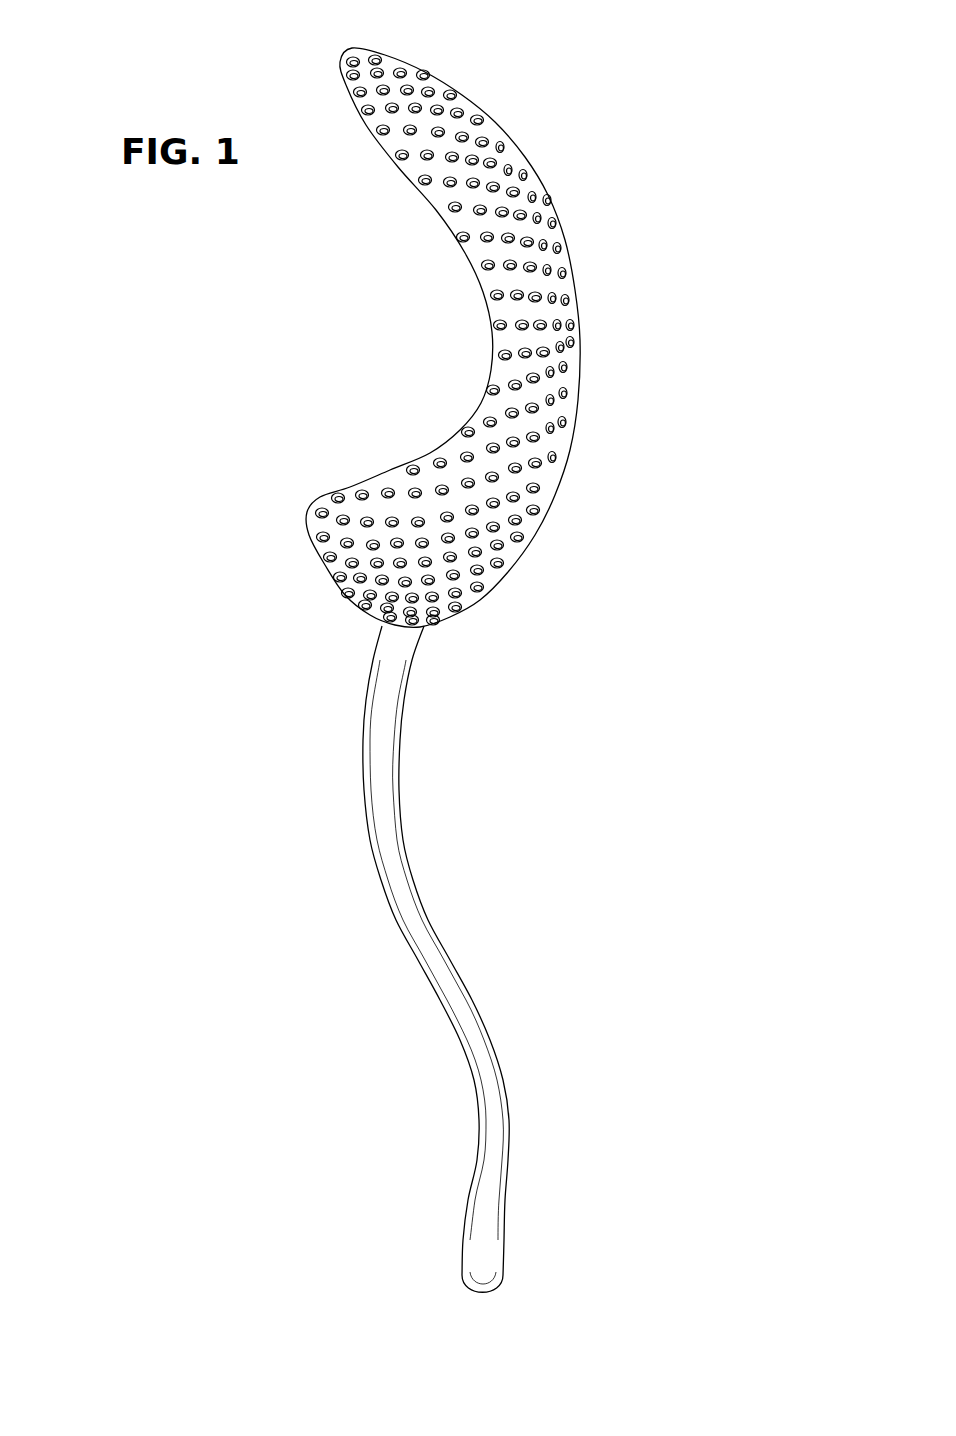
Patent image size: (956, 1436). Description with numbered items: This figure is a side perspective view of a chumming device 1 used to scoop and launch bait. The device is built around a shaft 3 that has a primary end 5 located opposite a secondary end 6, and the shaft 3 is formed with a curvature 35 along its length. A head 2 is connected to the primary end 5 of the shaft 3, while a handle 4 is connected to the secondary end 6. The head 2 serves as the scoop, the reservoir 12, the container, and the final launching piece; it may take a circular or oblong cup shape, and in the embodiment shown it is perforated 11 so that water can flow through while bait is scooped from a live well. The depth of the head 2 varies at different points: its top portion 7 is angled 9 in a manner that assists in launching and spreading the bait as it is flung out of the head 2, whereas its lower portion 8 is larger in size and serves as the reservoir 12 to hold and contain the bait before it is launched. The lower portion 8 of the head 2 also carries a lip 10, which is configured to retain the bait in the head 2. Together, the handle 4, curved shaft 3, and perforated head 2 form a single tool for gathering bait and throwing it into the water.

The chumming device 1 is at (670, 78).
The head 2 is at (612, 402).
The shaft 3 is at (402, 815).
The handle 4 is at (508, 1238).
The primary end 5 is at (420, 640).
The secondary end 6 is at (460, 1267).
The top portion 7 is at (338, 76).
The lower portion 8 is at (360, 565).
The angled 9 is at (490, 360).
The lip 10 is at (307, 520).
The perforated 11 is at (483, 120).
The reservoir 12 is at (405, 443).
The curvature 35 is at (400, 830).